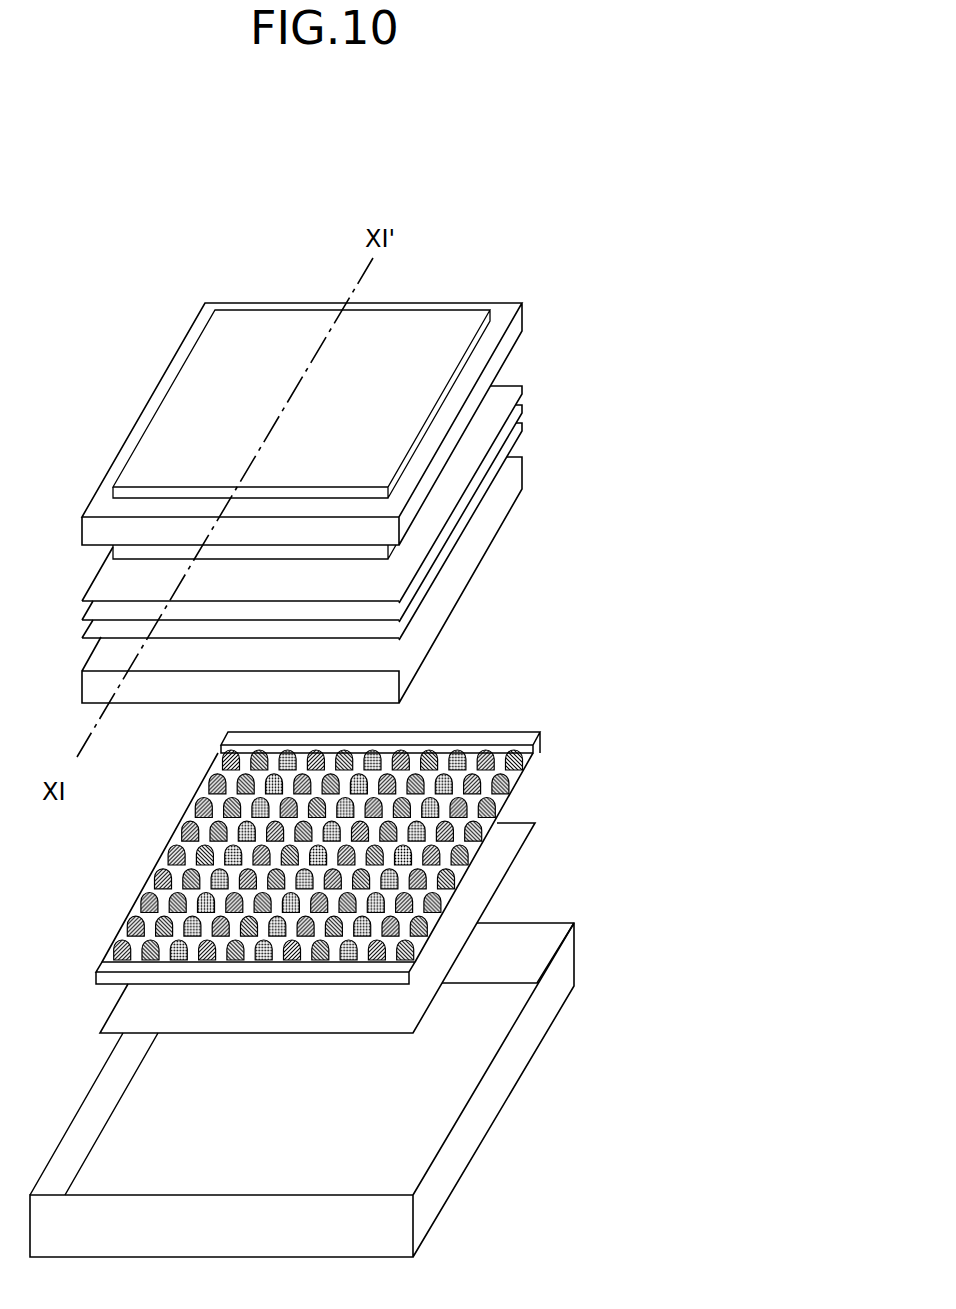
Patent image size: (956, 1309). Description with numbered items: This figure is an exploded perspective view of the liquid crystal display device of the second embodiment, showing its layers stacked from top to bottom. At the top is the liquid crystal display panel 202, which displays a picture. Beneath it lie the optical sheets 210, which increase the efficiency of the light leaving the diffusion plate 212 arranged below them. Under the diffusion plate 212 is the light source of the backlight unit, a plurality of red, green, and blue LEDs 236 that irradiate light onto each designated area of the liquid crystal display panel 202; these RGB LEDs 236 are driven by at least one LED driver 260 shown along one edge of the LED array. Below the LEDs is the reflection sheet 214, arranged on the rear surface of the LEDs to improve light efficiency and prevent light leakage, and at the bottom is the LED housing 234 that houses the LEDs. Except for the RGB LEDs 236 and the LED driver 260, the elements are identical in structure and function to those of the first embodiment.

The liquid crystal display panel 202 is at (512, 335).
The optical sheets 210 is at (548, 383).
The diffusion plate 212 is at (440, 603).
The LED driver 260 is at (537, 738).
The red, green, and blue LEDs (RGB LEDs) 236 is at (492, 803).
The reflection sheet 214 is at (505, 880).
The LED housing 234 is at (567, 968).